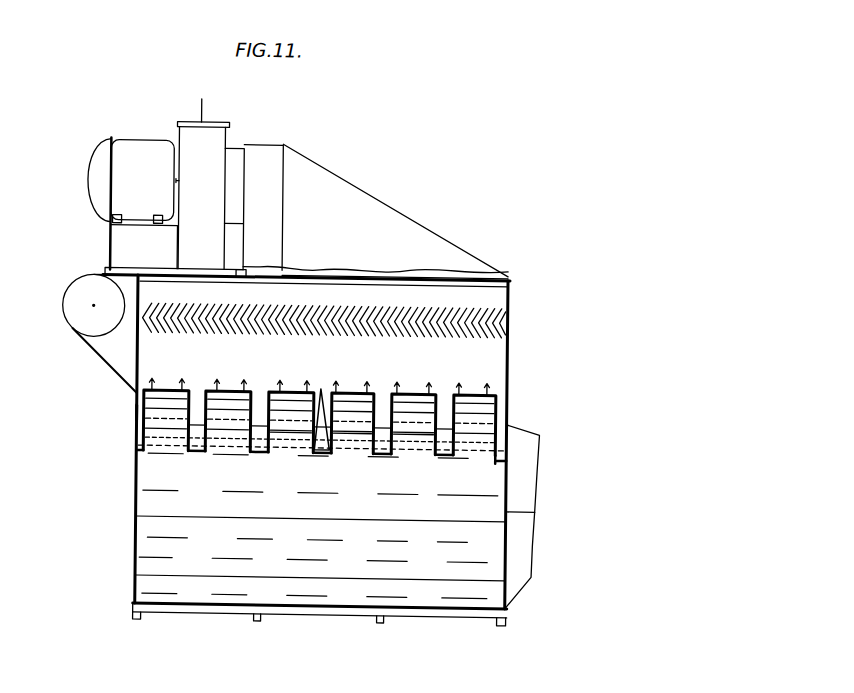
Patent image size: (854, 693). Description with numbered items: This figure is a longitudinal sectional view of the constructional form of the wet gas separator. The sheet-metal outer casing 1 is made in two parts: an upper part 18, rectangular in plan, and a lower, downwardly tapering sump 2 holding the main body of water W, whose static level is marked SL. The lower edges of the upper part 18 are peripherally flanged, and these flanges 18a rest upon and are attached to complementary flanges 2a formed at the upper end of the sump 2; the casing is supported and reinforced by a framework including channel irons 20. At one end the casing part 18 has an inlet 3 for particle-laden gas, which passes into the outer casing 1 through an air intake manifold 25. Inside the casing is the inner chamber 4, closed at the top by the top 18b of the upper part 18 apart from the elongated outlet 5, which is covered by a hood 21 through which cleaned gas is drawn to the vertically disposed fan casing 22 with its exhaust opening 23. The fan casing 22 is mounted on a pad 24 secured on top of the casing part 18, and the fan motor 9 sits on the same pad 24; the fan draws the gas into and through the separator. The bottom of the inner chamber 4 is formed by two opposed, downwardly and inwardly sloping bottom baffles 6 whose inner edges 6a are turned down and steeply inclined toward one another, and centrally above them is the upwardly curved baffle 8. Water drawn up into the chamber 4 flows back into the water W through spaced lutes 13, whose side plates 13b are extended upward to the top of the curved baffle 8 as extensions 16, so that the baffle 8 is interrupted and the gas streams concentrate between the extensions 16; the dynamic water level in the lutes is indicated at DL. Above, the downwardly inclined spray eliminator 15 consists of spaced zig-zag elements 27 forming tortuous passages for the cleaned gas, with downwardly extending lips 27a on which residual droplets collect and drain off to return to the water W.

The outer casing 1 is at (138, 481).
The sump 2 is at (138, 542).
The complementary flanges 2a is at (138, 414).
The inlet 3 is at (82, 283).
The inner chamber 4 is at (497, 357).
The outlet 5 is at (316, 275).
The bottom baffles 6 is at (286, 447).
The inner edges 6a is at (413, 436).
The upwardly curved baffle 8 is at (237, 389).
The fan motor 9 is at (155, 160).
The lutes 13 is at (333, 449).
The side plates 13b is at (207, 447).
The spray eliminator 15 is at (236, 316).
The upward extensions 16 is at (204, 425).
The upper part 18 is at (510, 392).
The flanges 18a is at (517, 421).
The top 18b is at (151, 277).
The channel irons 20 is at (139, 615).
The hood 21 is at (377, 220).
The fan casing 22 is at (222, 148).
The exhaust opening 23 is at (203, 101).
The pad 24 is at (258, 269).
The air intake manifold 25 is at (109, 354).
The zig-zag elements 27 is at (366, 321).
The downwardly extending lips 27a is at (393, 317).
The dynamic water level DL is at (202, 436).
The static water level SL is at (227, 445).
The water W is at (318, 557).